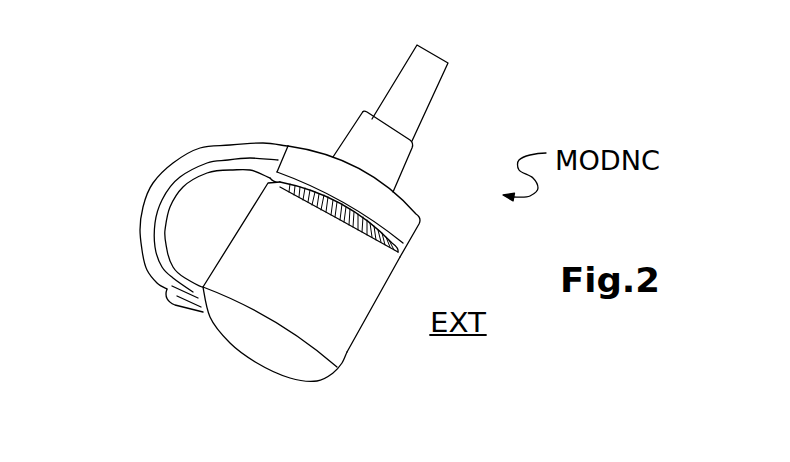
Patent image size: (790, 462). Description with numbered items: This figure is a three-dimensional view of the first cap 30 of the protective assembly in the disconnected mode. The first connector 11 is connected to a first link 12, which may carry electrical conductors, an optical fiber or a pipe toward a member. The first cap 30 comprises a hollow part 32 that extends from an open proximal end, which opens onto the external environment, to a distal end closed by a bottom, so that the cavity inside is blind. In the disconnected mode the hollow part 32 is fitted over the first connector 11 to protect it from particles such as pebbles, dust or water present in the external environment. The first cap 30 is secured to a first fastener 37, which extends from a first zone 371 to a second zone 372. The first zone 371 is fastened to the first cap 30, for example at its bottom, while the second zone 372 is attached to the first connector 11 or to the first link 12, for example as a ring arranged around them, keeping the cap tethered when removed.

The first connector 11 is at (390, 243).
The first link 12 is at (397, 158).
The first cap 30 is at (243, 328).
The hollow part 32 is at (335, 316).
The first fastener 37 is at (151, 199).
The first zone 371 is at (170, 288).
The second zone 372 is at (314, 163).